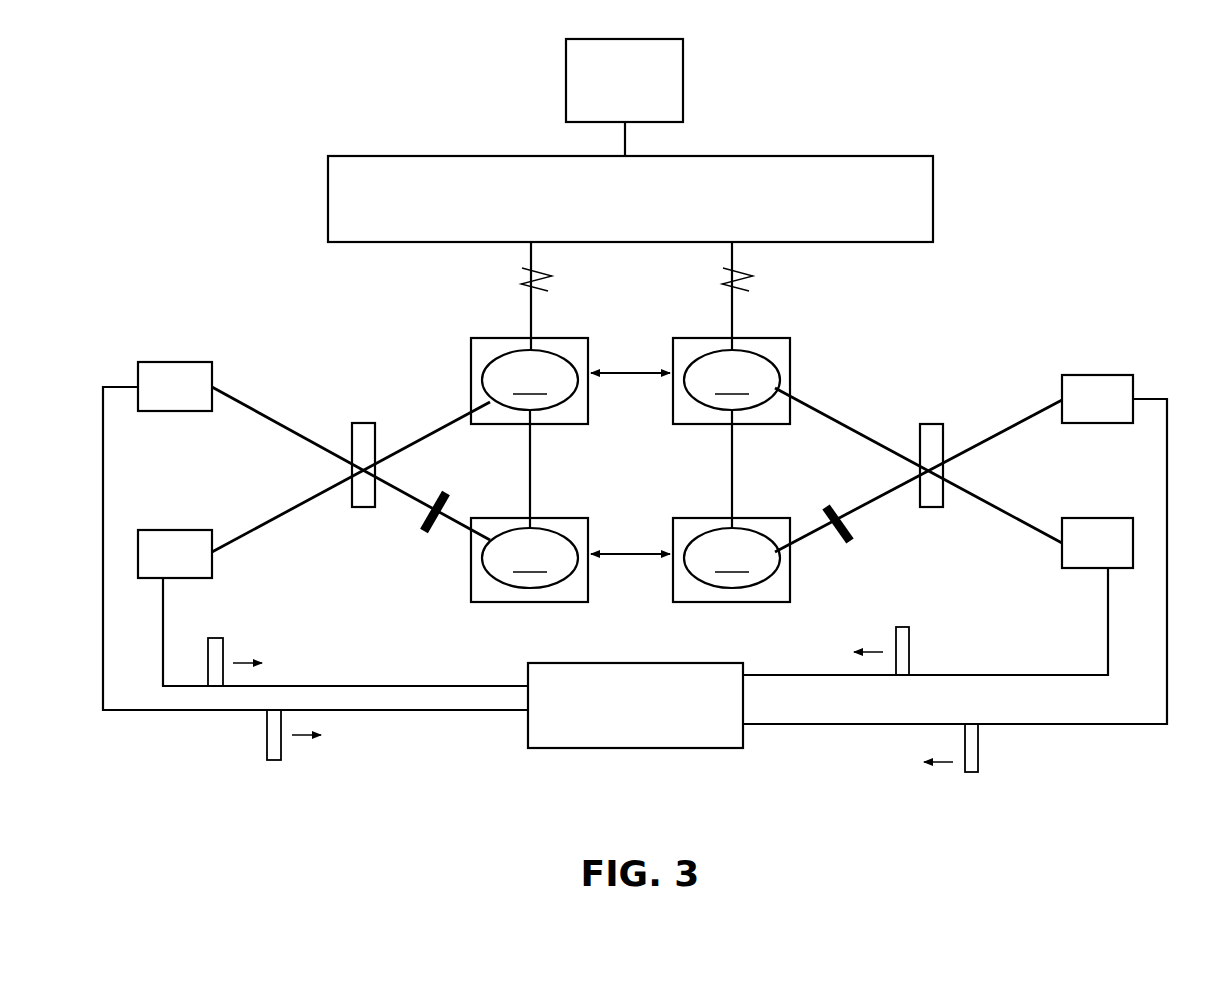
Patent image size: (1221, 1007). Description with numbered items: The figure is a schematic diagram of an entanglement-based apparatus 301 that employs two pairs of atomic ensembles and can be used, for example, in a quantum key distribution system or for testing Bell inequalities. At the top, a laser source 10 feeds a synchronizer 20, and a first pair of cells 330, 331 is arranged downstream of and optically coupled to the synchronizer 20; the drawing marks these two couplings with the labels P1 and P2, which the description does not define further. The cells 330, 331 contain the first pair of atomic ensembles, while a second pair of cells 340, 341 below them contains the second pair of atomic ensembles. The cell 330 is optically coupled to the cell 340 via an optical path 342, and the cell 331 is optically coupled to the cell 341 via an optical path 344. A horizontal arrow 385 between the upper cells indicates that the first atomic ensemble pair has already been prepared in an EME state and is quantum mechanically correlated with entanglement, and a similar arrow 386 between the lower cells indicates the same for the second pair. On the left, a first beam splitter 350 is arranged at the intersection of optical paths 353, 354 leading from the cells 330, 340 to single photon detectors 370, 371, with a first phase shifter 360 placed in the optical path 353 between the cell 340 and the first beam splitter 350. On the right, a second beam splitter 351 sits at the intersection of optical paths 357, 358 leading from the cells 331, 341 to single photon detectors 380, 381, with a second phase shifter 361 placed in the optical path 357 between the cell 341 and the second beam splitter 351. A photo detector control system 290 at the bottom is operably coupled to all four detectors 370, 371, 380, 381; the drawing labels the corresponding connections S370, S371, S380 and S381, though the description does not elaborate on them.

The laser source 10 is at (608, 95).
The synchronizer 20 is at (613, 215).
The photo detector control system 290 is at (612, 719).
The entanglement-based apparatus 301 is at (1104, 129).
The cell 330 is at (493, 338).
The cell 331 is at (768, 345).
The cell 340 is at (490, 603).
The cell 341 is at (755, 603).
The optical path 342 is at (531, 468).
The optical path 344 is at (731, 458).
The first beam splitter 350 is at (366, 422).
The second beam splitter 351 is at (933, 422).
The optical path 353 is at (268, 424).
The optical path 354 is at (280, 518).
The optical path 357 is at (1000, 435).
The optical path 358 is at (1007, 505).
The first phase shifter 360 is at (452, 504).
The second phase shifter 361 is at (826, 508).
The single photon detector 370 is at (151, 401).
The single photon detector 371 is at (151, 568).
The single photon detector 380 is at (1074, 413).
The single photon detector 381 is at (1074, 557).
The arrow 385 is at (626, 371).
The arrow 386 is at (635, 552).
The first drive signal P1 is at (552, 278).
The second drive signal P2 is at (753, 278).
The detector signal S370 is at (282, 760).
The detector signal S371 is at (224, 650).
The detector signal S380 is at (979, 748).
The detector signal S381 is at (910, 640).